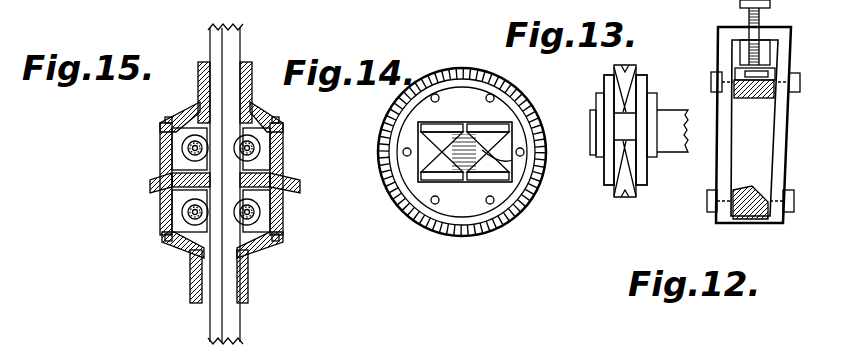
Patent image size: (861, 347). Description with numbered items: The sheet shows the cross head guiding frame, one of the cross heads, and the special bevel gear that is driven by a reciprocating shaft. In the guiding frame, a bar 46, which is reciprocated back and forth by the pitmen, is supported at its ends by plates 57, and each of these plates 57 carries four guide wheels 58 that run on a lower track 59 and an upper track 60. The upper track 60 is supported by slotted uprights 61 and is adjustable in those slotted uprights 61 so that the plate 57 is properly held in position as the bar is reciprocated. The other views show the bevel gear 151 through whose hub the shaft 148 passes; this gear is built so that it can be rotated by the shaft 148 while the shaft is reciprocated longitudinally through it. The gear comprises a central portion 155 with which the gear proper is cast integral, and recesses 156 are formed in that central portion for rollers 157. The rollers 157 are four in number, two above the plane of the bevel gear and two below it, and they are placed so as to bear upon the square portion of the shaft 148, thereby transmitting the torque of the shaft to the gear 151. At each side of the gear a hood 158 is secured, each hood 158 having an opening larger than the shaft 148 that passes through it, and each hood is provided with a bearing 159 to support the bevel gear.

In FIG. 15, the shaft 148 is at (240, 322).
In FIG. 14, the shaft 148 is at (462, 152).
In FIG. 15, the bevel gear 151 is at (300, 190).
In FIG. 14, the bevel gear 151 is at (413, 214).
In FIG. 15, the central portion 155 is at (160, 209).
In FIG. 14, the central portion 155 is at (465, 165).
In FIG. 15, the recesses 156 is at (160, 195).
In FIG. 14, the recesses 156 is at (512, 160).
In FIG. 15, the rollers 157 is at (184, 144).
In FIG. 14, the rollers 157 is at (418, 181).
In FIG. 15, the hood 158 is at (190, 118).
In FIG. 15, the bearing 159 is at (198, 84).
In FIG. 13, the bar 46 is at (672, 148).
In FIG. 13, the plates 57 is at (606, 182).
In FIG. 13, the guide wheels 58 is at (628, 78).
In FIG. 12, the track 59 is at (747, 222).
In FIG. 12, the upper track 60 is at (754, 63).
In FIG. 12, the slotted uprights 61 is at (776, 140).